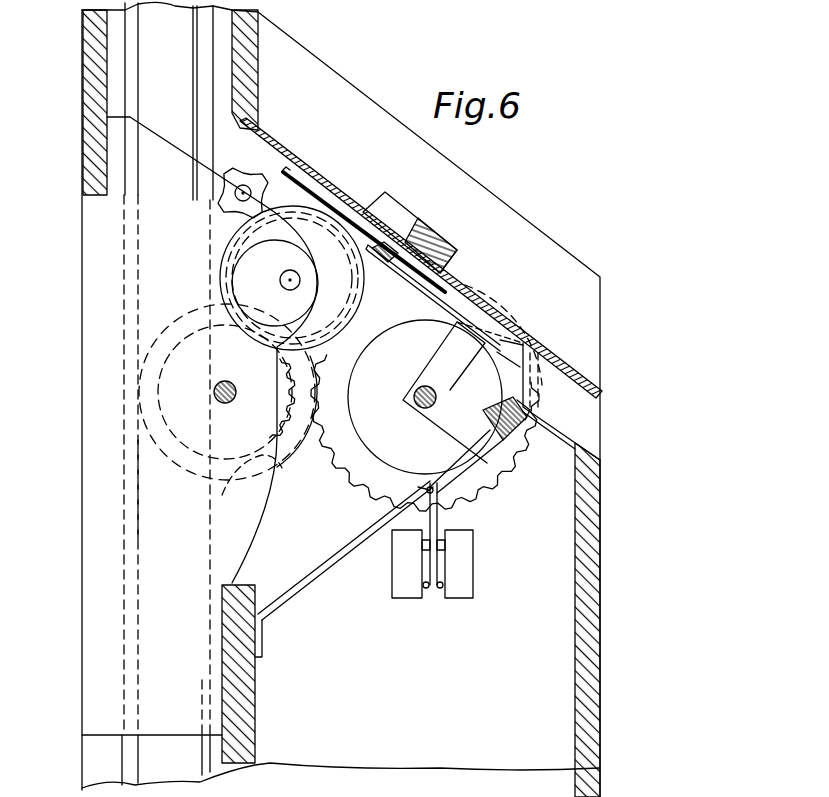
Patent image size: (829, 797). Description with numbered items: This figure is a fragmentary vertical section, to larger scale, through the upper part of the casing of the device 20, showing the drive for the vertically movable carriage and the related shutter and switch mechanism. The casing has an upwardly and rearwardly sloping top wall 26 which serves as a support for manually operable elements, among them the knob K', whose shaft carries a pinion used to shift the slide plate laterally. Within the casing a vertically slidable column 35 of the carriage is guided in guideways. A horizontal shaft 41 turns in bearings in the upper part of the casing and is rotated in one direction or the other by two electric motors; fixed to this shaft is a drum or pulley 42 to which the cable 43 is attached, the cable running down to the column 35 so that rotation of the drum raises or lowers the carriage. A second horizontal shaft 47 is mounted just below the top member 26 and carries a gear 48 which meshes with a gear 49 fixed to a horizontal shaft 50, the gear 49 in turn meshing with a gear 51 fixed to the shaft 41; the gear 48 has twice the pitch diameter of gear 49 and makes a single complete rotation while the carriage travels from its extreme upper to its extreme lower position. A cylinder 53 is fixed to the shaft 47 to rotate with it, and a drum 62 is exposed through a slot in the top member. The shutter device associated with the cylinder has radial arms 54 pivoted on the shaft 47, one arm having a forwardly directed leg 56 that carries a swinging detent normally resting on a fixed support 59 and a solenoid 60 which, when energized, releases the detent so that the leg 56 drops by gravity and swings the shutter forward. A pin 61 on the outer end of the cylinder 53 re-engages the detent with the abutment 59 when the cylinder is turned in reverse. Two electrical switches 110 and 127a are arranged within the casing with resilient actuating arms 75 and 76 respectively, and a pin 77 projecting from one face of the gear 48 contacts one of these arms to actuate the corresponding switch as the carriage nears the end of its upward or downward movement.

The machine frame 20 is at (530, 197).
The vertically slidable column 35 is at (130, 47).
The top wall 26 is at (282, 160).
The gear 49 is at (325, 228).
The drum 62 is at (228, 256).
The horizontal shaft 50 is at (281, 282).
The knob K' is at (391, 258).
The horizontal shaft 47 is at (413, 402).
The fixed support 59 is at (494, 489).
The solenoid 60 is at (506, 463).
The forwardly directed leg 56 is at (457, 408).
The cylinder 53 is at (487, 362).
The pin 61 is at (466, 453).
The radial arm 54 is at (515, 446).
The horizontal shaft 41 is at (214, 393).
The drum or pulley 42 is at (180, 462).
The gear 48 is at (310, 460).
The gear 51 is at (258, 468).
The cable 43 is at (142, 498).
The resilient actuating arm 76 is at (427, 523).
The pin 77 is at (426, 491).
The resilient actuating arm 75 is at (438, 522).
The electrical switch 127a is at (397, 568).
The electrical switch 110 is at (465, 580).